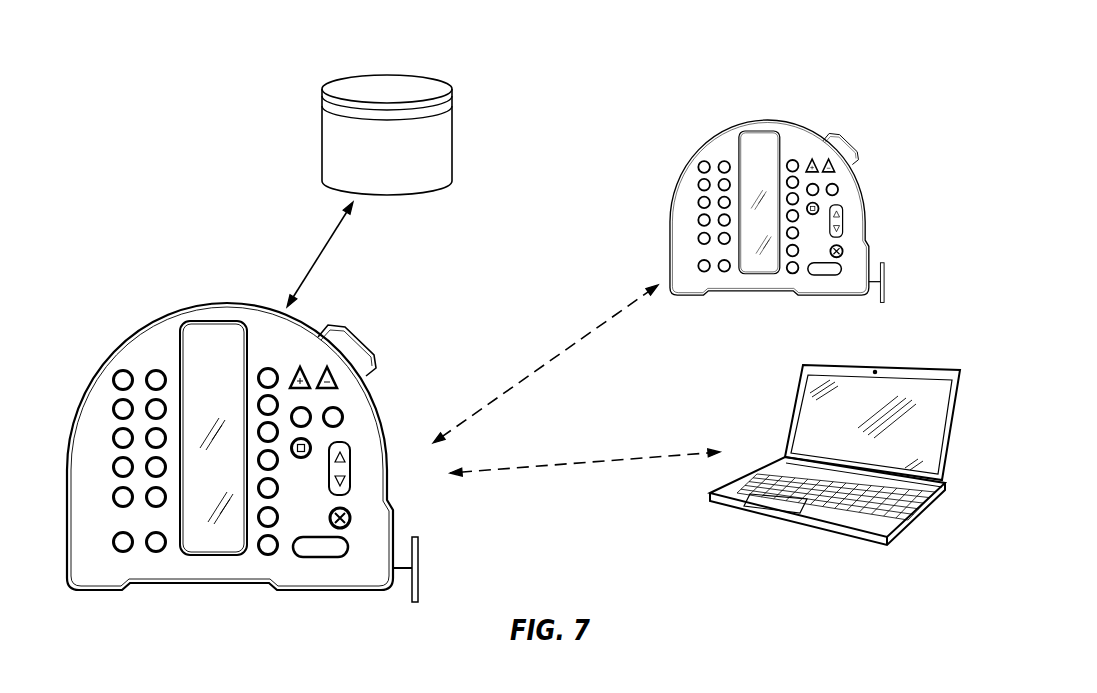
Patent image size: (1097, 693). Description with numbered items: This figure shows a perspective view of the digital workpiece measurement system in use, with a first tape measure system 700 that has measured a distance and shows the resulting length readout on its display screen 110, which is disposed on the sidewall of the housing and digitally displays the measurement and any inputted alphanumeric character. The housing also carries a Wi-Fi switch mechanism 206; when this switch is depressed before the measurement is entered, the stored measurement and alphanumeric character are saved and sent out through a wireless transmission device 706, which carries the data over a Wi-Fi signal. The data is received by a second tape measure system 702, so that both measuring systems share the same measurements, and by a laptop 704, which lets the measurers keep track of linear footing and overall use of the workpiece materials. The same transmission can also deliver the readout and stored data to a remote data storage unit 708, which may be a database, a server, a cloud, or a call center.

The tape measure system #1 700 is at (230, 435).
The display screen 110 is at (215, 338).
The Wi-Fi switch mechanism 206 is at (130, 585).
The tape measure system #2 702 is at (697, 122).
The laptop 704 is at (788, 365).
The wireless transmission device 706 is at (547, 360).
The remote data storage unit 708 is at (360, 90).